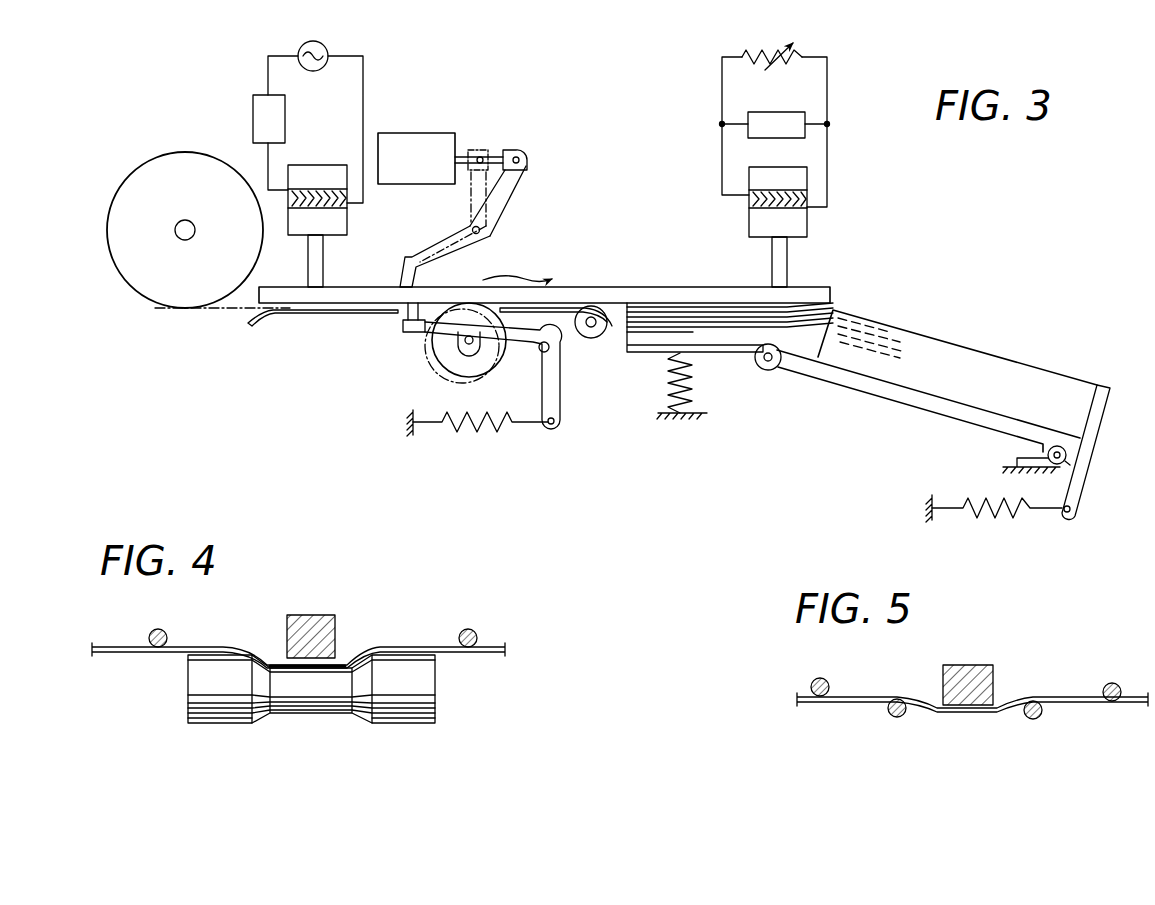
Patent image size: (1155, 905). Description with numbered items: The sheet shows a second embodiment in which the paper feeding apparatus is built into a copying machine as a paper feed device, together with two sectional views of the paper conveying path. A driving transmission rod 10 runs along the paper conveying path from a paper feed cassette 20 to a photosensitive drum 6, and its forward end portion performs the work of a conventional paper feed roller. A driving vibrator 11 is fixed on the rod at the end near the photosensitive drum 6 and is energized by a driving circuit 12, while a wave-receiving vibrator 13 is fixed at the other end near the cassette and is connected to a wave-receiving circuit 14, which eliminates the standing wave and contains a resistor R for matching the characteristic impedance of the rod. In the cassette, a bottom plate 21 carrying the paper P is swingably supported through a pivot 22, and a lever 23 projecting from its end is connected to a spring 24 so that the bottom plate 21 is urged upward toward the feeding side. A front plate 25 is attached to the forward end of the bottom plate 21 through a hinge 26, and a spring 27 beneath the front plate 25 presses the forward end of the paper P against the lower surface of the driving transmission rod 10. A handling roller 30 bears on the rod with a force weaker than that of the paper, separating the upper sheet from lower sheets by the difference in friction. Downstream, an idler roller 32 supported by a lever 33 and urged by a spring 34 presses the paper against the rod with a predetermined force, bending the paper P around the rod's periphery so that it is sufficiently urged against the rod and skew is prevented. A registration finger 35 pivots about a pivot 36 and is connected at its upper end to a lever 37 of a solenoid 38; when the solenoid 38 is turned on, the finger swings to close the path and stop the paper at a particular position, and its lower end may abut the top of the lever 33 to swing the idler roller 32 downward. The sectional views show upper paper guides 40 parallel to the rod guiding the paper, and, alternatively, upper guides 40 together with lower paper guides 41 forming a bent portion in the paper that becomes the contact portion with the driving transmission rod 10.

In FIG. 3, the photosensitive drum 6 is at (133, 265).
In FIG. 3, the driving transmission rod 10 is at (612, 285).
In FIG. 4, the driving transmission rod 10 is at (312, 622).
In FIG. 5, the driving transmission rod 10 is at (980, 665).
In FIG. 3, the driving vibrator 11 is at (320, 173).
In FIG. 3, the driving circuit 12 is at (255, 85).
In FIG. 3, the wave-receiving vibrator 13 is at (795, 178).
In FIG. 3, the wave-receiving circuit 14 is at (835, 95).
In FIG. 3, the paper feed cassette 20 is at (930, 332).
In FIG. 3, the bottom plate 21 is at (913, 398).
In FIG. 3, the pivot 22 is at (1050, 452).
In FIG. 3, the lever 23 is at (1073, 492).
In FIG. 3, the spring 24 is at (977, 498).
In FIG. 3, the front plate 25 is at (717, 353).
In FIG. 3, the hinge 26 is at (772, 362).
In FIG. 3, the spring 27 is at (670, 370).
In FIG. 3, the handling roller 30 is at (598, 330).
In FIG. 3, the idler roller 32 is at (448, 350).
In FIG. 4, the idler roller 32 is at (405, 703).
In FIG. 3, the lever 33 is at (552, 393).
In FIG. 3, the spring 34 is at (480, 428).
In FIG. 3, the registration finger 35 is at (410, 253).
In FIG. 3, the pivot 36 is at (465, 223).
In FIG. 3, the lever 37 is at (505, 183).
In FIG. 3, the solenoid 38 is at (437, 143).
In FIG. 4, the upper paper guide 40 is at (473, 635).
In FIG. 5, the upper paper guide 40 is at (1105, 688).
In FIG. 5, the lower paper guide 41 is at (1042, 718).
In FIG. 3, the paper P is at (735, 330).
In FIG. 4, the paper P is at (225, 645).
In FIG. 5, the paper P is at (860, 695).
In FIG. 3, the resistor R is at (772, 38).